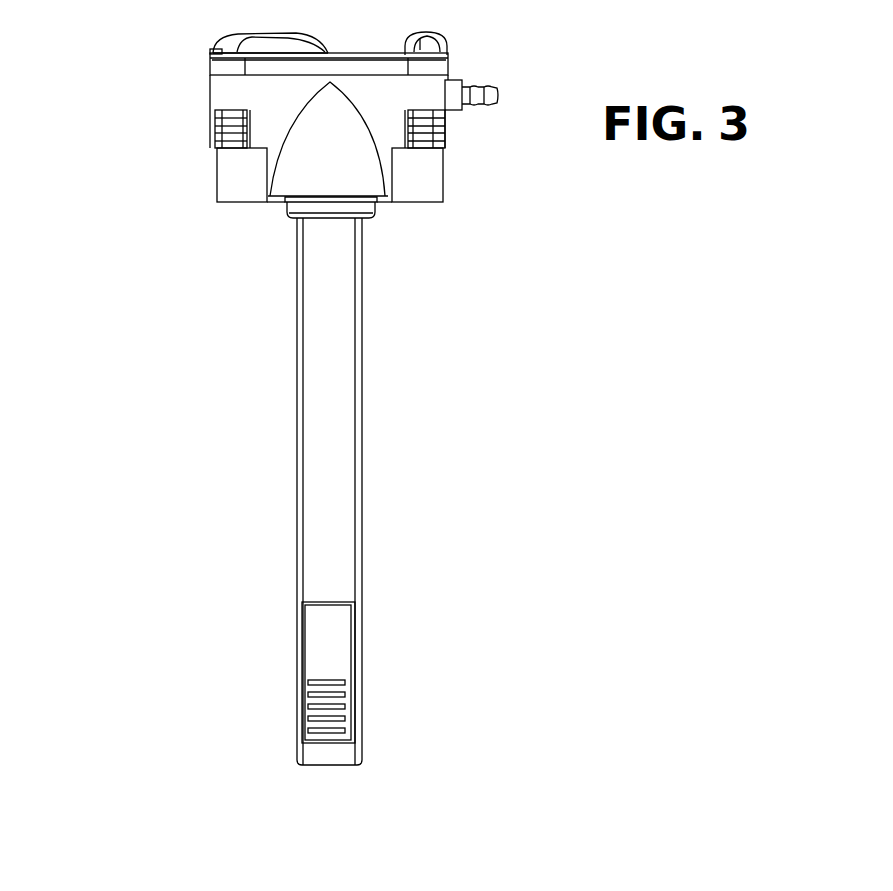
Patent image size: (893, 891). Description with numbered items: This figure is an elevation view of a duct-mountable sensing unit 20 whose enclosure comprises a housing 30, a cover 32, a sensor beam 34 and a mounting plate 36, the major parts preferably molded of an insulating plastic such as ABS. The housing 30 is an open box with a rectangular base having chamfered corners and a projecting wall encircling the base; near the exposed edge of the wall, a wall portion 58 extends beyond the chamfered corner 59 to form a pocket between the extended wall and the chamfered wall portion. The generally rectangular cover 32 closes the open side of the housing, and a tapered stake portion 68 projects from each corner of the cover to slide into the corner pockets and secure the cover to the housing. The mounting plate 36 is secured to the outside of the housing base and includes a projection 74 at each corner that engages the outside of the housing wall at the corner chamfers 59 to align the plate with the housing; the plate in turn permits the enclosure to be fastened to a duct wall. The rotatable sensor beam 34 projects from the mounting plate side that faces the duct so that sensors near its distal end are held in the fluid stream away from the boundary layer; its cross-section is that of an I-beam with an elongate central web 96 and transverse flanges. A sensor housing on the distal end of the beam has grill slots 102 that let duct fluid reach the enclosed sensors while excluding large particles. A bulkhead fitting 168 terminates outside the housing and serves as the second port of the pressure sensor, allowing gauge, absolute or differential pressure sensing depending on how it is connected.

The sensing unit 20 is at (321, 392).
The housing 30 is at (321, 126).
The cover 32 is at (318, 44).
The sensor beam 34 is at (364, 348).
The mounting plate 36 is at (382, 211).
The wall portion 58 is at (450, 72).
The chamfered corner 59 is at (250, 140).
The tapered stake portion 68 is at (440, 136).
The projection 74 is at (212, 186).
The central web 96 is at (333, 410).
The grill slots 102 is at (340, 682).
The bulkhead fitting 168 is at (488, 86).